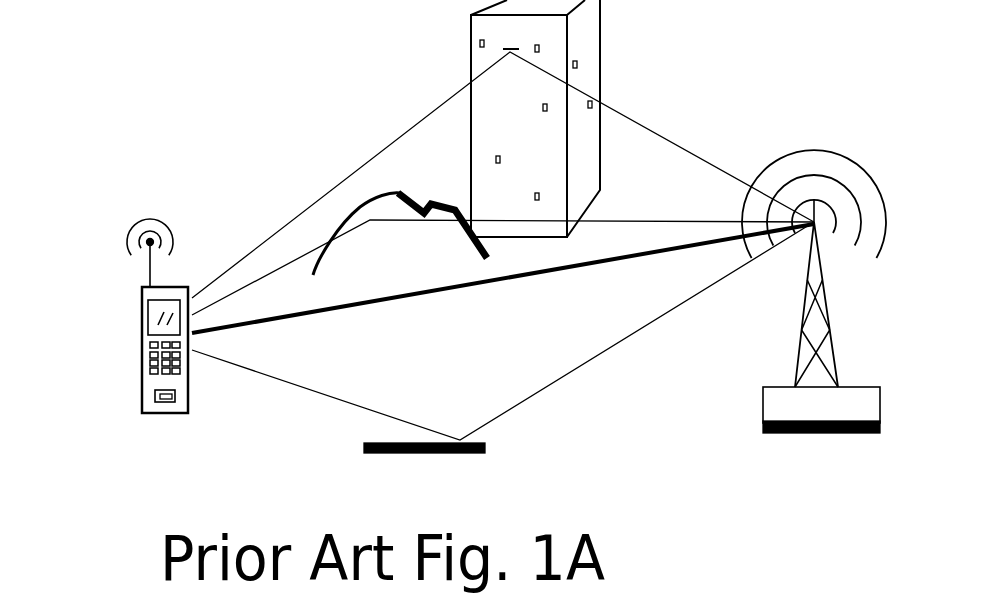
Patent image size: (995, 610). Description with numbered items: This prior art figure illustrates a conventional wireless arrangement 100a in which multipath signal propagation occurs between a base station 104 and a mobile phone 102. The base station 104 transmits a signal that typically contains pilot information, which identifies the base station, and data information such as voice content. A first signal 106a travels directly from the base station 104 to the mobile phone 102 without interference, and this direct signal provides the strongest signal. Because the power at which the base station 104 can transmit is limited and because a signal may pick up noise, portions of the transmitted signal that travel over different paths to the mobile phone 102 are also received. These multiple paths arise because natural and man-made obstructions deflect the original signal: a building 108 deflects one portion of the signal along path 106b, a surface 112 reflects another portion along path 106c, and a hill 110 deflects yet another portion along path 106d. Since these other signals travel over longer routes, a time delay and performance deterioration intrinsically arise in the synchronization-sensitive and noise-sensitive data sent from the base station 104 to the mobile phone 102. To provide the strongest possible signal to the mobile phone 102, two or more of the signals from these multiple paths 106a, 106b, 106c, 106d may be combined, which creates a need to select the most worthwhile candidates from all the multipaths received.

The prior art wireless communication system 100a is at (877, 85).
The mobile phone 102 is at (138, 303).
The base station 104 is at (800, 358).
The first signal 106a is at (375, 303).
The path 106b is at (618, 110).
The path 106c is at (503, 415).
The path 106d is at (333, 242).
The building 108 is at (512, 119).
The hill 110 is at (402, 256).
The surface 112 is at (400, 457).